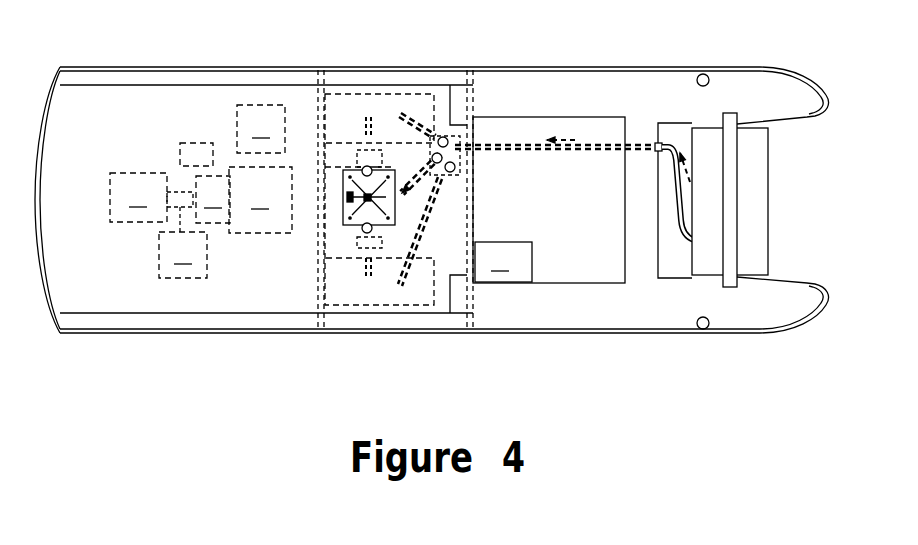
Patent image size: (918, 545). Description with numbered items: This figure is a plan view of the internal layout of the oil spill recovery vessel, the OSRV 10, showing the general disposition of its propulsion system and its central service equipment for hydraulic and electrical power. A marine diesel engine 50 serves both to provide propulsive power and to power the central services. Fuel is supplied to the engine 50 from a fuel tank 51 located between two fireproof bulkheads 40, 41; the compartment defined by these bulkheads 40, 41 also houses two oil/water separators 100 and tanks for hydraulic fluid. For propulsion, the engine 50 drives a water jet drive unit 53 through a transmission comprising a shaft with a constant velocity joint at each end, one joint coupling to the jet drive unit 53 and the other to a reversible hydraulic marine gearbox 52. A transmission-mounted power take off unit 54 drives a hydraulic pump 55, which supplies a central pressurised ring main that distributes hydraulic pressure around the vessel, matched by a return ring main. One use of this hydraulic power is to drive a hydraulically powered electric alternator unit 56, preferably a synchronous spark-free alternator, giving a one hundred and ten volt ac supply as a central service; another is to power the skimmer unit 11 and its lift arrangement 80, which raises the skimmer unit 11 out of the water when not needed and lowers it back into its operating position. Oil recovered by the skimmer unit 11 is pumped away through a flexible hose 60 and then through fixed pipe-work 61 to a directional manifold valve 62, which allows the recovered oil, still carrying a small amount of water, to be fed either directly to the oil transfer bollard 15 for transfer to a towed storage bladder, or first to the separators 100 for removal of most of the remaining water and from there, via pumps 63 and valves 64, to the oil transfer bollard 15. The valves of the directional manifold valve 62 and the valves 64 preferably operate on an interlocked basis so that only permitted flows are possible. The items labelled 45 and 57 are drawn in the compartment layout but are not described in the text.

The OSRV 10 is at (200, 62).
The skimmer unit 11 is at (760, 188).
The oil transfer bollard 15 is at (353, 207).
The fireproof bulkhead 40 is at (318, 288).
The fireproof bulkhead 41 is at (474, 285).
The controller 45 is at (503, 262).
The marine diesel engine 50 is at (260, 200).
The fuel tank 51 is at (333, 190).
The reversible hydraulic marine gearbox 52 is at (213, 199).
The water jet drive unit 53 is at (138, 197).
The power take off unit 54 is at (183, 197).
The hydraulic pump 55 is at (183, 255).
The hydraulically powered electric alternator unit 56 is at (261, 129).
The sensor module 57 is at (203, 143).
The flexible hose 60 is at (668, 162).
The fixed pipe-work 61 is at (570, 152).
The directional manifold valve 62 is at (458, 163).
The pump 63 is at (358, 160).
The valve 64 is at (362, 168).
The lift arrangement 80 is at (733, 120).
The oil/water separator 100 is at (370, 103).